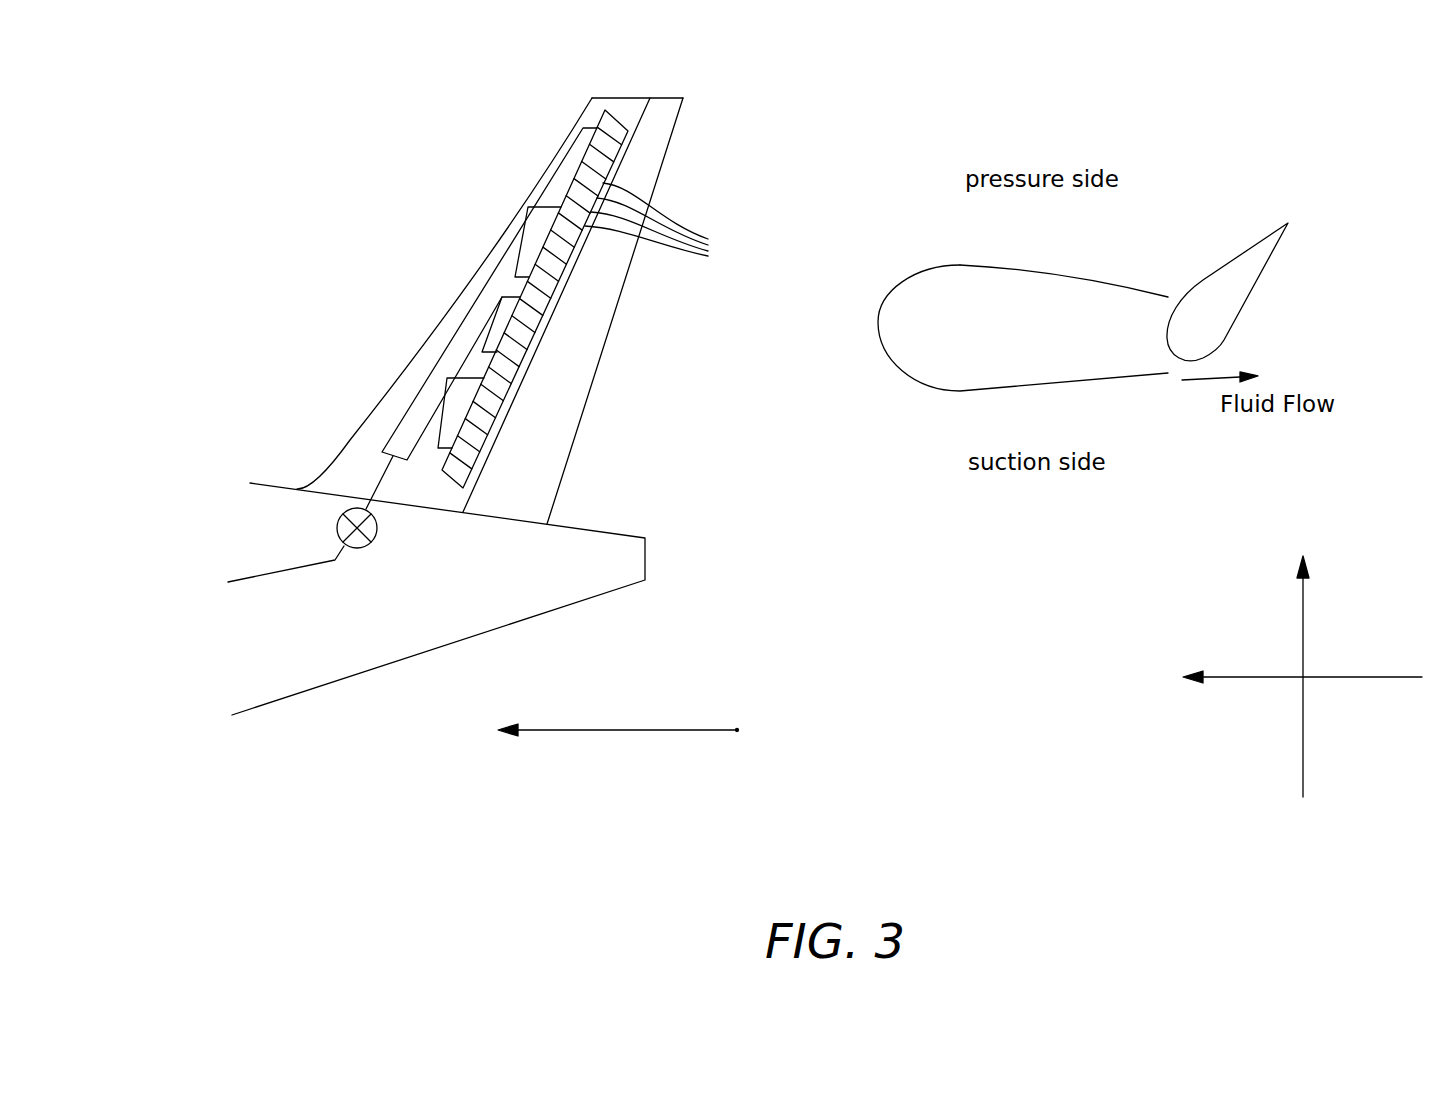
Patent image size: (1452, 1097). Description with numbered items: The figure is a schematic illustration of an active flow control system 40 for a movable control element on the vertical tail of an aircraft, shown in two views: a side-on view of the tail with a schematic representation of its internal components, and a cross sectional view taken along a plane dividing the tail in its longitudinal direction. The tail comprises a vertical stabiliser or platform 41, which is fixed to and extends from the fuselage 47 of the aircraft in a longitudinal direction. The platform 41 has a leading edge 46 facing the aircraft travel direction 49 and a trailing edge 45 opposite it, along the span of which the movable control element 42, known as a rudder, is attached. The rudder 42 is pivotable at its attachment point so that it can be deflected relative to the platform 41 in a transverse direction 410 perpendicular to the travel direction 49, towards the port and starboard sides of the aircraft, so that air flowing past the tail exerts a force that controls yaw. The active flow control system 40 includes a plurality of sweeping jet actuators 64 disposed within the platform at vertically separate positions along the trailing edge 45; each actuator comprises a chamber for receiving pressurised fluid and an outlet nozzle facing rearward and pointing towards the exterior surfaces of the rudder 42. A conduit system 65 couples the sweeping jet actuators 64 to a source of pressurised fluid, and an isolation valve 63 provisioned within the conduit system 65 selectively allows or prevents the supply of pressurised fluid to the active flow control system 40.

The active flow control system 40 is at (572, 265).
The platform 41 is at (358, 455).
The movable control element 42 is at (537, 456).
The trailing edge 45 is at (648, 139).
The leading edge 46 is at (483, 263).
The fuselage 47 is at (265, 474).
The aircraft travel direction 49 is at (700, 732).
The isolation valve 63 is at (337, 523).
The sweeping jet actuators 64 is at (665, 223).
The conduit system 65 is at (562, 168).
The transverse direction 410 is at (737, 730).